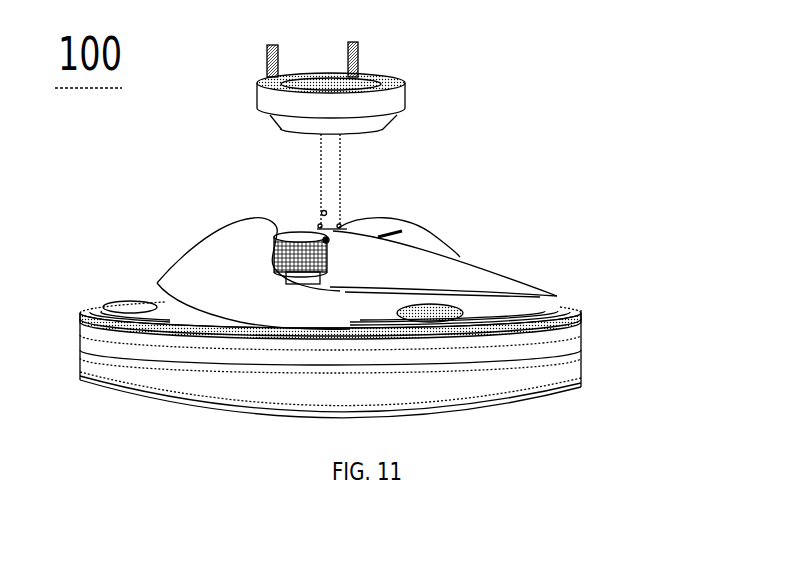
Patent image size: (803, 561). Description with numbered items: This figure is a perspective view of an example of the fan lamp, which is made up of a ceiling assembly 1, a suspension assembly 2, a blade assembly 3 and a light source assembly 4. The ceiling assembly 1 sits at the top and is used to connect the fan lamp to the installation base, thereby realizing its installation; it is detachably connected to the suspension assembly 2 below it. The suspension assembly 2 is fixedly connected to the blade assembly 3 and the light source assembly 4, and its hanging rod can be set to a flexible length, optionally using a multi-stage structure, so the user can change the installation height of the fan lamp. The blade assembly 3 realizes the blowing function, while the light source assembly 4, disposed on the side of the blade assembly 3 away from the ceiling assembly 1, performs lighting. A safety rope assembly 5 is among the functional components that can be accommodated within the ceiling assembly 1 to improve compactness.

The ceiling assembly 1 is at (395, 98).
The suspension assembly 2 is at (333, 176).
The blade assembly 3 is at (495, 277).
The light source assembly 4 is at (578, 378).
The safety rope assembly 5 is at (356, 52).